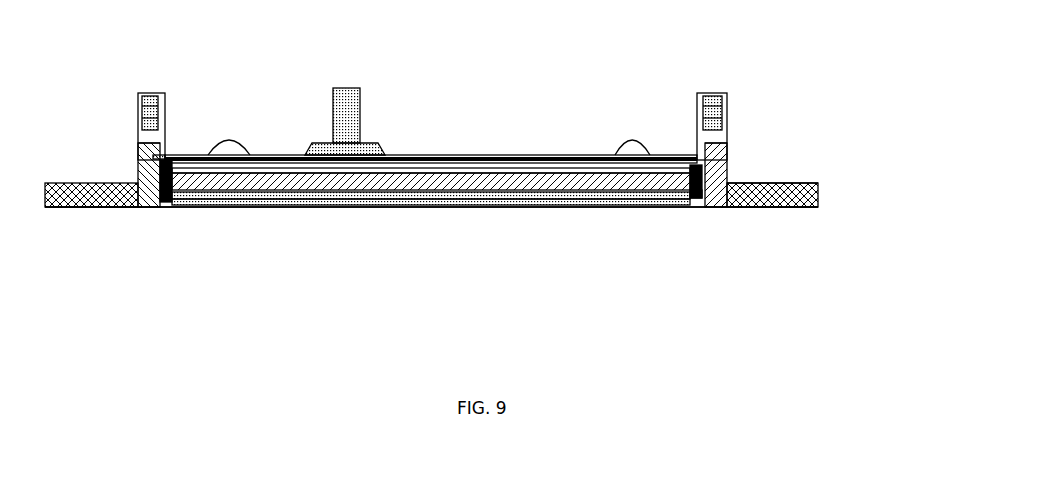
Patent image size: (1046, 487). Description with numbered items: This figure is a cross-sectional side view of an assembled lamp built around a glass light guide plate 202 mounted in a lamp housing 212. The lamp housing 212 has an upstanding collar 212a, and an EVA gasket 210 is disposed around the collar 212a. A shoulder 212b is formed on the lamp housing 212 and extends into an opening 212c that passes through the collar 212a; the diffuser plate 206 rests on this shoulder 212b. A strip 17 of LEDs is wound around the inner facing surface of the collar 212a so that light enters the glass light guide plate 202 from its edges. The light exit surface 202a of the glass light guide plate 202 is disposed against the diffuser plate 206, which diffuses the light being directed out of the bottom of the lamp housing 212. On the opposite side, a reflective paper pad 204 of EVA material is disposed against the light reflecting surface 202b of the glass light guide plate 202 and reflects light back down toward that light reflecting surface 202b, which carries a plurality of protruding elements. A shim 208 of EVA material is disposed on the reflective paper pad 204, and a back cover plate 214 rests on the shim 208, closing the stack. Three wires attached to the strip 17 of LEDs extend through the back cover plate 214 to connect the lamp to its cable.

The strip of LEDs 17 is at (742, 207).
The glass light guide plate 202 is at (420, 196).
The light exit surface 202a is at (290, 200).
The light reflecting surface 202b is at (478, 185).
The reflective paper pad 204 is at (405, 170).
The diffuser plate 206 is at (441, 195).
The shim 208 is at (272, 155).
The EVA gasket 210 is at (787, 184).
The lamp housing 212 is at (818, 198).
The collar 212a is at (727, 152).
The shoulder 212b is at (676, 203).
The opening 212c is at (690, 165).
The back cover plate 214 is at (178, 157).